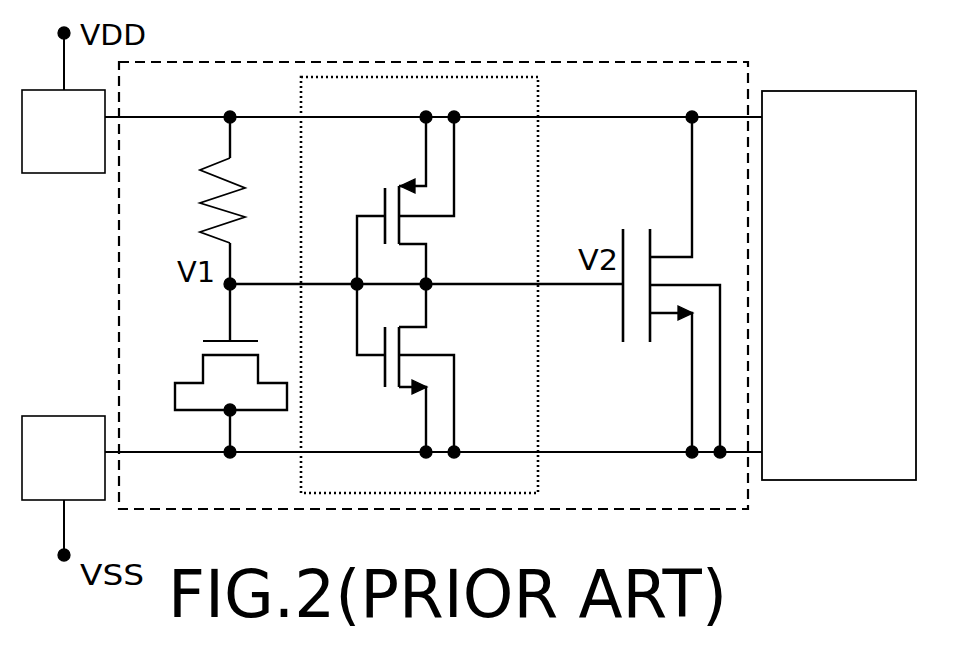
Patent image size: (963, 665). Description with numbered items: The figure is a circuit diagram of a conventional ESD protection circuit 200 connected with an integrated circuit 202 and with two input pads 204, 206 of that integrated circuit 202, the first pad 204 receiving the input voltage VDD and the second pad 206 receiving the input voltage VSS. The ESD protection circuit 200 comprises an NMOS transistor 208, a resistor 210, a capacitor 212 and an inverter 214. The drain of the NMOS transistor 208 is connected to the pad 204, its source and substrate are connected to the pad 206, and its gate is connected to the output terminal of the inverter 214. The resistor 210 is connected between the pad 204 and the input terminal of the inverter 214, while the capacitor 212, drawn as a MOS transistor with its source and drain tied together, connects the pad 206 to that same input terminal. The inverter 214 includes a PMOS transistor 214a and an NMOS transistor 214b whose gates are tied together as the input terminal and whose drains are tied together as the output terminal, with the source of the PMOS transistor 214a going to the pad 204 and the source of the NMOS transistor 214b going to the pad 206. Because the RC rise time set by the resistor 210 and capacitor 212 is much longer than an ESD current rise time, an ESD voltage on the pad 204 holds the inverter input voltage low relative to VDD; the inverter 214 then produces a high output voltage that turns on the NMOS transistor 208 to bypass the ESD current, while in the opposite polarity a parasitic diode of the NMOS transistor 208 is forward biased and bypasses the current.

The ESD protection circuit 200 is at (748, 495).
The integrated circuit 202 is at (839, 285).
The input pad 204 is at (63, 131).
The input pad 206 is at (63, 458).
The NMOS transistor 208 is at (622, 313).
The resistor 210 is at (229, 146).
The capacitor 212 is at (222, 341).
The inverter 214 is at (460, 250).
The PMOS transistor 214a is at (388, 200).
The NMOS transistor 214b is at (385, 370).